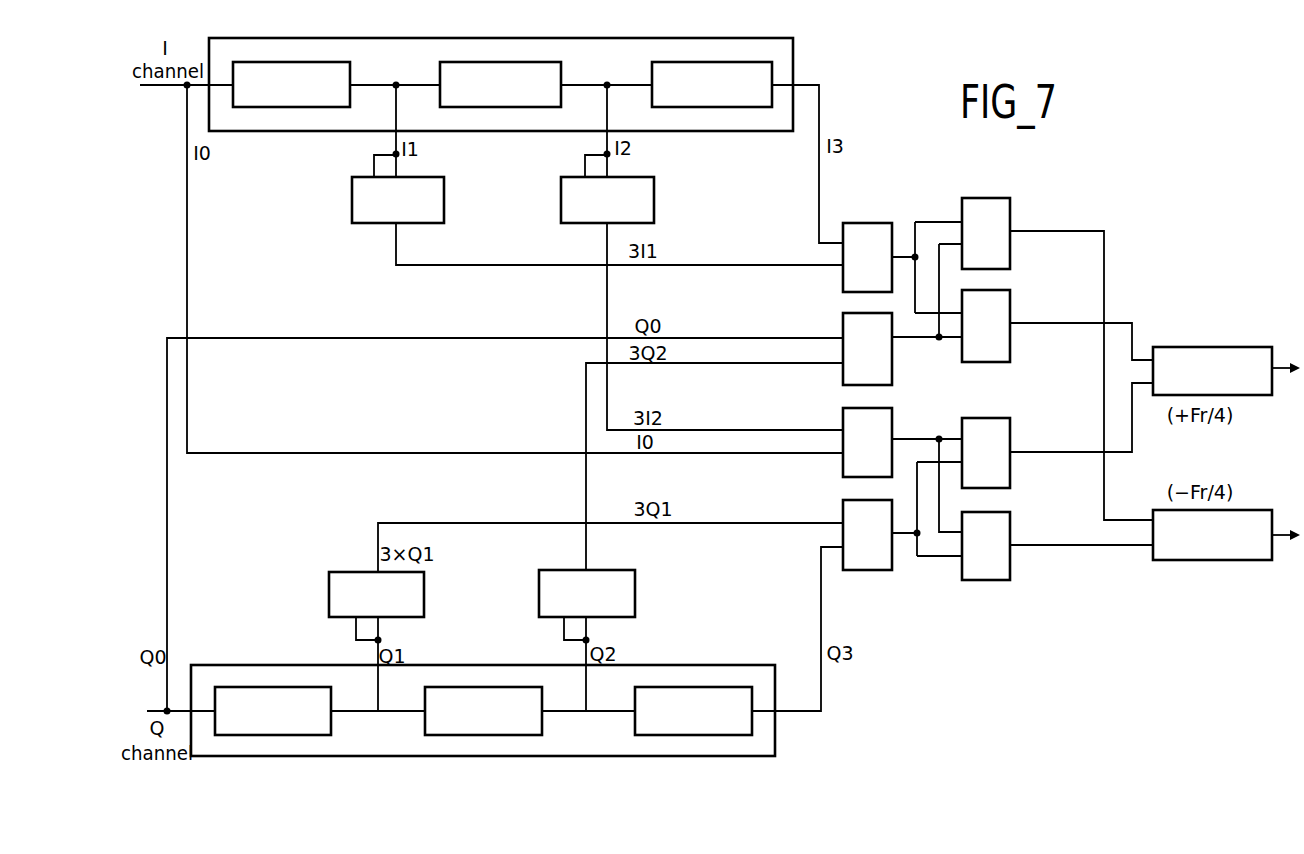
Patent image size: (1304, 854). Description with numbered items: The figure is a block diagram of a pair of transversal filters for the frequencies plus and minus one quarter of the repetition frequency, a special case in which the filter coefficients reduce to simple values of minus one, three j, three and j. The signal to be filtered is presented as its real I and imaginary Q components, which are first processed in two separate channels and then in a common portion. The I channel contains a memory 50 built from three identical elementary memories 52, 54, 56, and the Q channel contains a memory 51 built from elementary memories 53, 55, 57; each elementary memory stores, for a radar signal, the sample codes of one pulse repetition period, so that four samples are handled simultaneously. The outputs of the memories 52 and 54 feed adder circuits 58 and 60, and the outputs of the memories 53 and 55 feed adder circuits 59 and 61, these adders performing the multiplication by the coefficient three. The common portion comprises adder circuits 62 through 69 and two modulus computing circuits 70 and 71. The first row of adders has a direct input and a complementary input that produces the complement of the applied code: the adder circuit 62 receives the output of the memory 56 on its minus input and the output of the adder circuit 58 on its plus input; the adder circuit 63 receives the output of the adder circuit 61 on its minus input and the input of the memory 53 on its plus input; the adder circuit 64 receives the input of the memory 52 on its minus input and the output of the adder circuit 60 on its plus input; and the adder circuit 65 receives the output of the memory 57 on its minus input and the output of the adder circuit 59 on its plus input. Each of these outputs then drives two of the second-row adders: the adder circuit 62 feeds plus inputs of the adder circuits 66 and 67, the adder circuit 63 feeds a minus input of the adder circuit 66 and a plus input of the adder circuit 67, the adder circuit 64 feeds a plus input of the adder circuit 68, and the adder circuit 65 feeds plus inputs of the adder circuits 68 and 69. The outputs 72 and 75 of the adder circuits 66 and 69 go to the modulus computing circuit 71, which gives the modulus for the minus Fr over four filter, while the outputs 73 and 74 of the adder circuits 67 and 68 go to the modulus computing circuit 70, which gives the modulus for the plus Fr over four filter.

The memory 50 is at (790, 132).
The memory 51 is at (748, 664).
The elementary memory 52 is at (265, 109).
The elementary memory 53 is at (262, 686).
The elementary memory 54 is at (500, 109).
The elementary memory 55 is at (487, 686).
The elementary memory 56 is at (722, 109).
The elementary memory 57 is at (695, 686).
The adder circuit 58 is at (352, 200).
The adder circuit 59 is at (329, 572).
The adder circuit 60 is at (654, 203).
The adder circuit 61 is at (539, 590).
The adder circuit 62 is at (865, 223).
The adder circuit 63 is at (843, 318).
The adder circuit 64 is at (843, 472).
The adder circuit 65 is at (868, 571).
The adder circuit 66 is at (985, 198).
The adder circuit 67 is at (1010, 295).
The adder circuit 68 is at (985, 418).
The adder circuit 69 is at (988, 581).
The modulus computing circuit 70 is at (1200, 347).
The modulus computing circuit 71 is at (1205, 561).
The output 72 is at (1058, 231).
The output 73 is at (1060, 323).
The output 74 is at (1055, 452).
The output 75 is at (1058, 545).